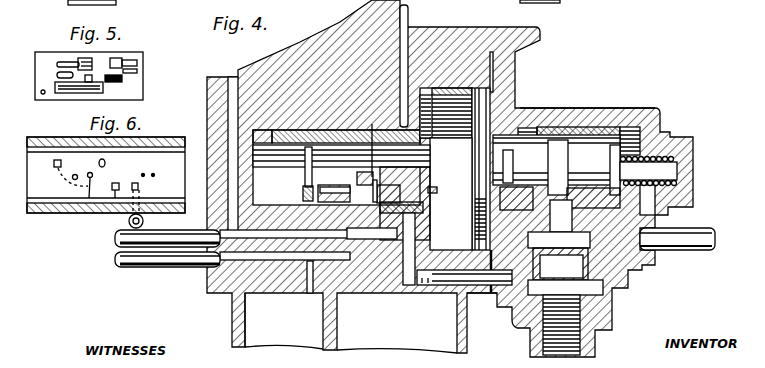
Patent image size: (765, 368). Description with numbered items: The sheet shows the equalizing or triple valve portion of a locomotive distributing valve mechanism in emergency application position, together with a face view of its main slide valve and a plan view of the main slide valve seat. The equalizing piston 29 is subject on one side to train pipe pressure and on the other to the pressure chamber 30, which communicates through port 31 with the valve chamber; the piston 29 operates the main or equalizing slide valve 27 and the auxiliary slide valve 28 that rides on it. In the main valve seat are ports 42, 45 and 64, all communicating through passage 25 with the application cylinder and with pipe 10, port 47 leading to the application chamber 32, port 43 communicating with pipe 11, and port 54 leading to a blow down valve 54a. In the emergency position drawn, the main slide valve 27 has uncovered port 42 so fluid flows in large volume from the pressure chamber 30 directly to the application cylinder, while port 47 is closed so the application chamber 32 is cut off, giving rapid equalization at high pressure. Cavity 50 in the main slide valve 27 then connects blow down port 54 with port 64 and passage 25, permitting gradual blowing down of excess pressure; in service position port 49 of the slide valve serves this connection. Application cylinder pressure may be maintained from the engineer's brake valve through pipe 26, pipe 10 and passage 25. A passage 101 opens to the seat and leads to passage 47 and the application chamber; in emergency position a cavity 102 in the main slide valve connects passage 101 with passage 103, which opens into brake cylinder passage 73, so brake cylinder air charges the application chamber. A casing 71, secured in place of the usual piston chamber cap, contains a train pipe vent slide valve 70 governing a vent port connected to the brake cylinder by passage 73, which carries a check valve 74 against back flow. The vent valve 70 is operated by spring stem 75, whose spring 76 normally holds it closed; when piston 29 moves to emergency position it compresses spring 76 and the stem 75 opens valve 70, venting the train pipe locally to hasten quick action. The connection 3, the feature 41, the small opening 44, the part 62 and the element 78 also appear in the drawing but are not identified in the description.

In FIG. 4, the shaft 3 is at (698, 248).
In FIG. 4, the pipe 10 is at (190, 236).
In FIG. 4, the pipe 11 is at (163, 267).
In FIG. 4, the passage 25 is at (245, 128).
In FIG. 4, the pipe 26 is at (275, 260).
In FIG. 5, the main slide valve 27 is at (135, 72).
In FIG. 4, the main slide valve 27 is at (427, 186).
In FIG. 4, the auxiliary slide valve 28 is at (363, 173).
In FIG. 4, the equalizing valve piston 29 is at (475, 140).
In FIG. 4, the pressure chamber 30 is at (447, 344).
In FIG. 4, the port 31 is at (428, 290).
In FIG. 4, the application chamber 32 is at (254, 310).
In FIG. 5, the plate 41 is at (75, 94).
In FIG. 6, the port 42 is at (54, 165).
In FIG. 4, the port 42 is at (304, 200).
In FIG. 6, the port 43 is at (106, 163).
In FIG. 5, the hole 44 is at (41, 92).
In FIG. 6, the port 45 is at (73, 178).
In FIG. 4, the port 45 is at (305, 178).
In FIG. 6, the port 47 is at (88, 199).
In FIG. 4, the port 47 is at (313, 266).
In FIG. 5, the port 49 is at (128, 62).
In FIG. 5, the cavity 50 is at (70, 62).
In FIG. 4, the cavity 50 is at (371, 145).
In FIG. 6, the port 54 is at (140, 187).
In FIG. 4, the port 54 is at (372, 238).
In FIG. 6, the blow down valve 54a is at (128, 224).
In FIG. 5, the key 62 is at (57, 75).
In FIG. 6, the port 64 is at (115, 199).
In FIG. 4, the port 64 is at (384, 183).
In FIG. 4, the slide valve 70 is at (588, 194).
In FIG. 4, the casing 71 is at (614, 113).
In FIG. 4, the passage 73 is at (458, 277).
In FIG. 4, the check valve 74 is at (590, 288).
In FIG. 4, the spring stem 75 is at (549, 127).
In FIG. 4, the spring 76 is at (678, 137).
In FIG. 4, the bolt 78 is at (572, 215).
In FIG. 6, the passage 101 is at (144, 174).
In FIG. 5, the cavity 102 is at (122, 80).
In FIG. 6, the passage 103 is at (155, 175).